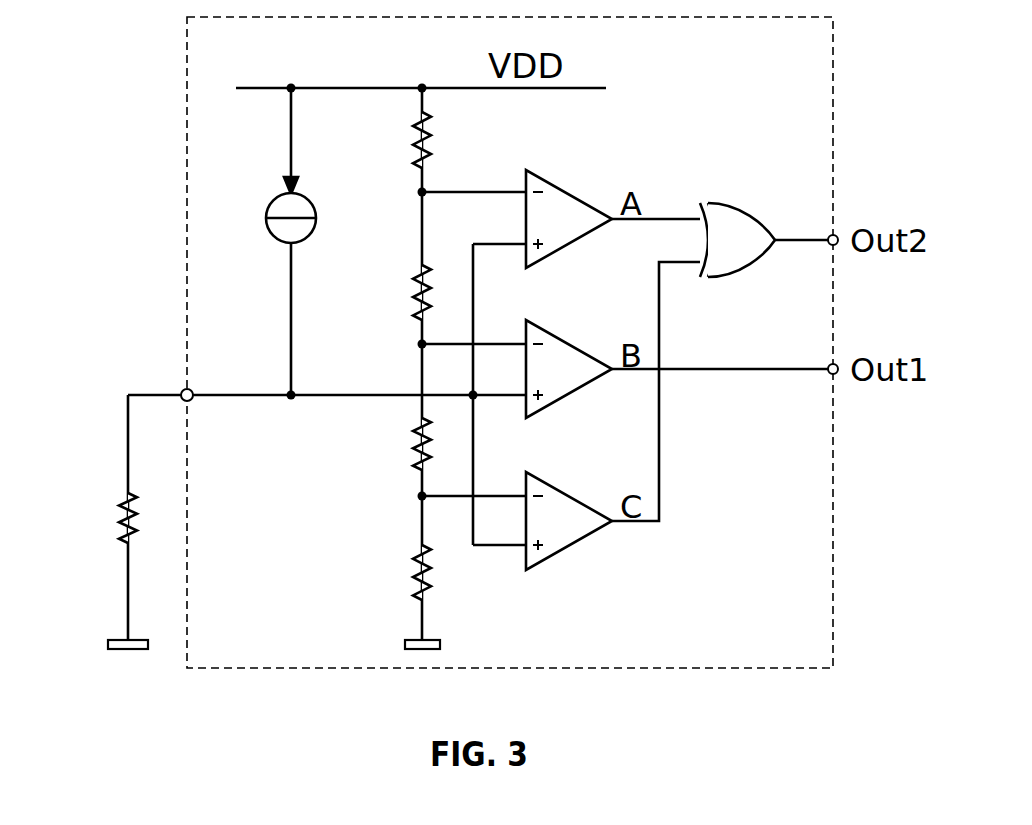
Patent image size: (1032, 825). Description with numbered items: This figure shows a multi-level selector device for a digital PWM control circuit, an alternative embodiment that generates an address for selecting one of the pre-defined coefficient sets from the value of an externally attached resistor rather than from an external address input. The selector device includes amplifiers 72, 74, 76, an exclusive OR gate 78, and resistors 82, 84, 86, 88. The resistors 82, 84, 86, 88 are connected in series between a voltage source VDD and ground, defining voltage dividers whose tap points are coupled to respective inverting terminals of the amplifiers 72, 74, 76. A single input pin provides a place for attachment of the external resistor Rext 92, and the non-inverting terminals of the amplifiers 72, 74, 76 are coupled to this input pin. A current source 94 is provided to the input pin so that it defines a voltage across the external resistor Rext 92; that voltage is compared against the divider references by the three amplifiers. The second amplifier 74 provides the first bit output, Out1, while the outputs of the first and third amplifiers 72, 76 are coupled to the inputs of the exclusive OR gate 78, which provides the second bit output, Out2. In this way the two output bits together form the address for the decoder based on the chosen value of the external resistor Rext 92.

The first amplifier 72 is at (572, 186).
The second amplifier 74 is at (572, 336).
The third amplifier 76 is at (572, 488).
The exclusive OR gate 78 is at (750, 207).
The resistor 82 is at (420, 142).
The resistor 84 is at (420, 297).
The resistor 86 is at (420, 448).
The resistor 88 is at (420, 572).
The external resistor Rext 92 is at (120, 505).
The current source 94 is at (267, 218).